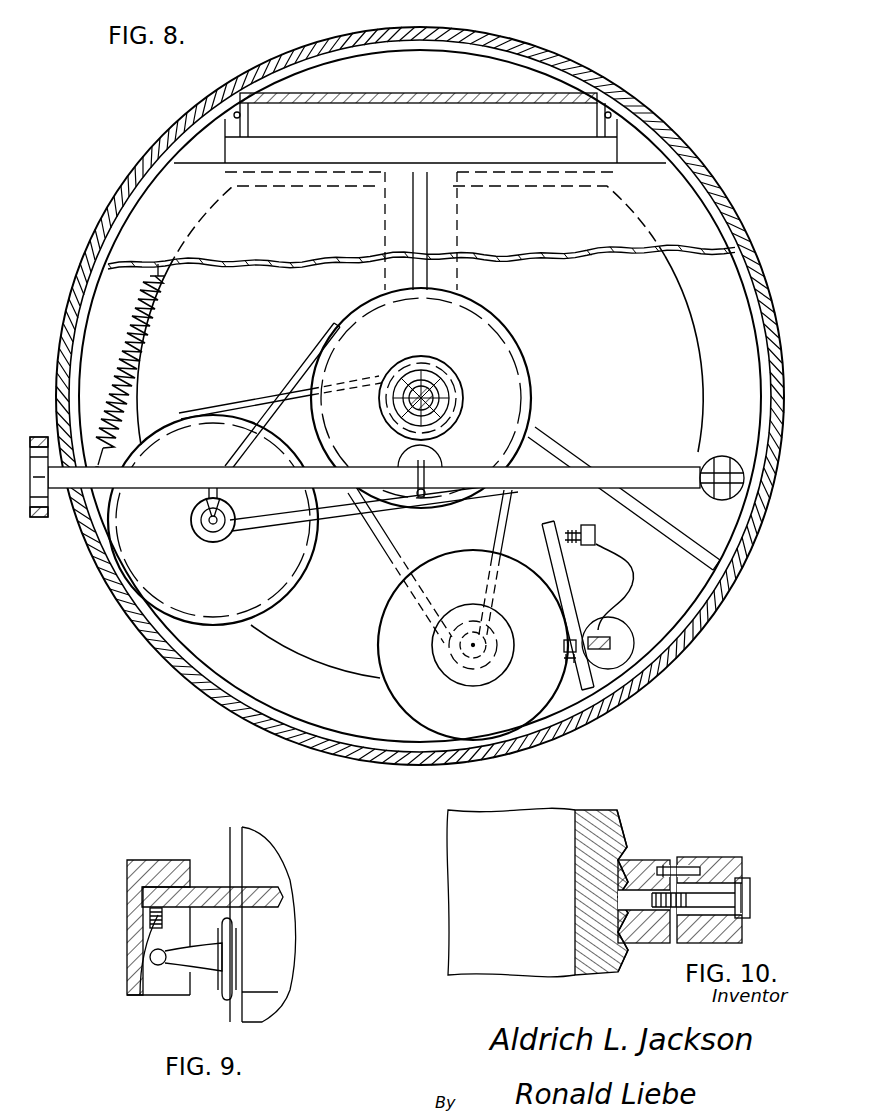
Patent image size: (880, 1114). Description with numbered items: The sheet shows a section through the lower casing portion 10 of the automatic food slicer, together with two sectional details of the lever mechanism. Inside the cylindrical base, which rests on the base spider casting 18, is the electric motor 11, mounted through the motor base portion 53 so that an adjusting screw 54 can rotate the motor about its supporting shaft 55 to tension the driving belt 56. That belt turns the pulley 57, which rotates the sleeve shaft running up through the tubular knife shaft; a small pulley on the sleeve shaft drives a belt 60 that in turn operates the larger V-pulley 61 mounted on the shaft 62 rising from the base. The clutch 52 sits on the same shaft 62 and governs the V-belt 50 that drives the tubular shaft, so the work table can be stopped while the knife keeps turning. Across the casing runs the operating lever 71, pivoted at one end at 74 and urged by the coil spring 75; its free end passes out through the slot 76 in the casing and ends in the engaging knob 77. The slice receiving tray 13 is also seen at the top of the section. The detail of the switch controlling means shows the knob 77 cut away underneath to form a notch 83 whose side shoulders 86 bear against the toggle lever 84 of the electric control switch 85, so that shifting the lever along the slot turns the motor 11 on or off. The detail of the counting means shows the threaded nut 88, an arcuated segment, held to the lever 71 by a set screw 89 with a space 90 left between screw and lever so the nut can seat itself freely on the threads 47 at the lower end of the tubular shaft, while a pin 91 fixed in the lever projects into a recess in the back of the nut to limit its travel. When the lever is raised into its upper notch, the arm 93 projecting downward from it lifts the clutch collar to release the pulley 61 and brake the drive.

In FIG. 8, the lower casing portion 10 is at (648, 128).
In FIG. 9, the lower casing portion 10 is at (244, 980).
In FIG. 8, the electric motor 11 is at (473, 645).
In FIG. 8, the slice receiving tray 13 is at (490, 93).
In FIG. 8, the base spider casting 18 is at (462, 188).
In FIG. 10, the threaded portion of tubular shaft 47 is at (630, 845).
In FIG. 8, the V-belt 50 is at (283, 395).
In FIG. 8, the clutch 52 is at (206, 510).
In FIG. 8, the motor base portion 53 is at (570, 612).
In FIG. 8, the adjusting screw 54 is at (563, 524).
In FIG. 8, the motor supporting shaft 55 is at (618, 617).
In FIG. 8, the driving belt 56 is at (392, 546).
In FIG. 8, the pulley 57 is at (500, 355).
In FIG. 8, the belt 60 is at (350, 545).
In FIG. 8, the larger V-pulley 61 is at (288, 595).
In FIG. 8, the pulley shaft 62 is at (210, 540).
In FIG. 8, the operating lever 71 is at (638, 478).
In FIG. 9, the operating lever 71 is at (205, 887).
In FIG. 10, the operating lever 71 is at (700, 880).
In FIG. 8, the lever pivot 74 is at (727, 458).
In FIG. 8, the coil spring 75 is at (105, 375).
In FIG. 9, the slot 76 is at (236, 940).
In FIG. 9, the engaging knob 77 is at (140, 860).
In FIG. 9, the notch 83 is at (140, 996).
In FIG. 9, the toggle lever 84 is at (180, 988).
In FIG. 9, the electric control switch 85 is at (224, 976).
In FIG. 10, the side shoulders 86 is at (563, 965).
In FIG. 8, the threaded nut 88 is at (438, 460).
In FIG. 10, the threaded nut 88 is at (640, 862).
In FIG. 10, the set screw 89 is at (751, 898).
In FIG. 10, the space 90 is at (724, 860).
In FIG. 10, the pin 91 is at (672, 867).
In FIG. 8, the arm 93 is at (190, 520).